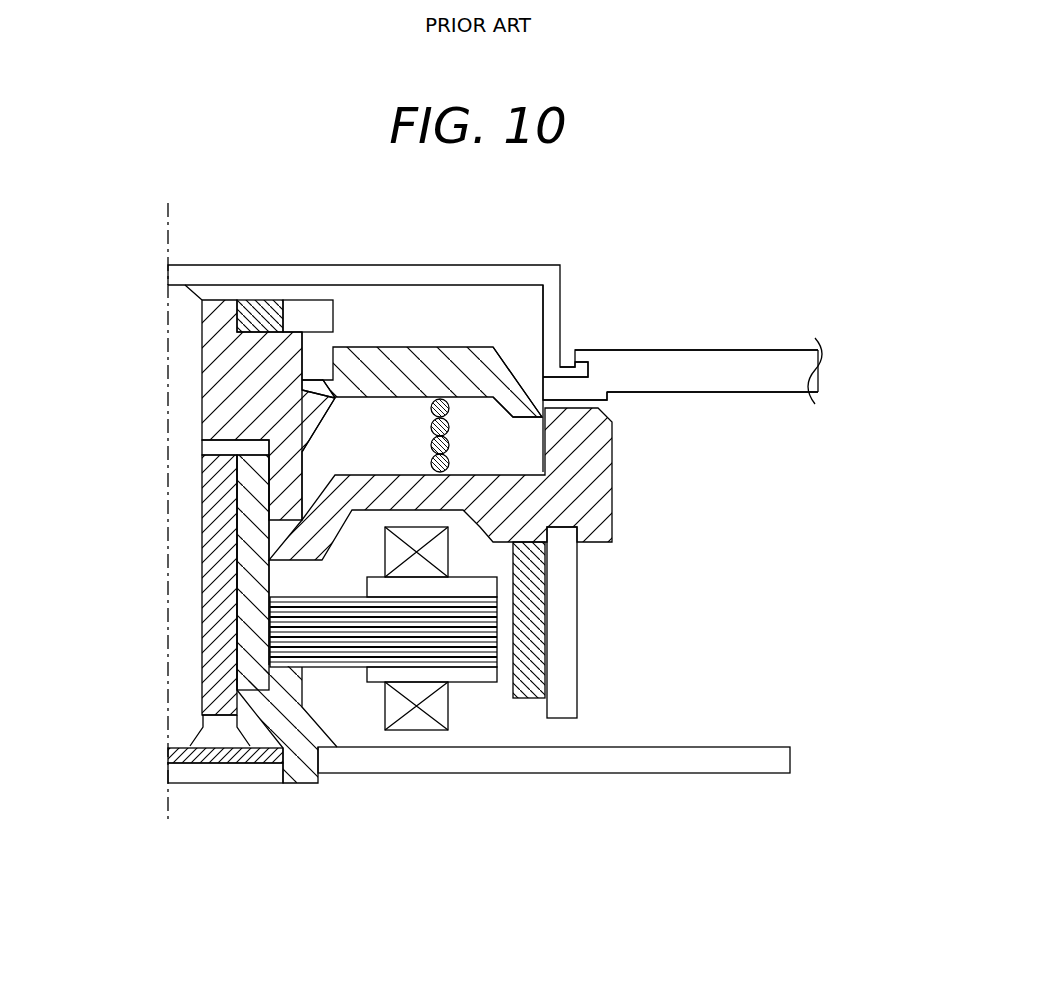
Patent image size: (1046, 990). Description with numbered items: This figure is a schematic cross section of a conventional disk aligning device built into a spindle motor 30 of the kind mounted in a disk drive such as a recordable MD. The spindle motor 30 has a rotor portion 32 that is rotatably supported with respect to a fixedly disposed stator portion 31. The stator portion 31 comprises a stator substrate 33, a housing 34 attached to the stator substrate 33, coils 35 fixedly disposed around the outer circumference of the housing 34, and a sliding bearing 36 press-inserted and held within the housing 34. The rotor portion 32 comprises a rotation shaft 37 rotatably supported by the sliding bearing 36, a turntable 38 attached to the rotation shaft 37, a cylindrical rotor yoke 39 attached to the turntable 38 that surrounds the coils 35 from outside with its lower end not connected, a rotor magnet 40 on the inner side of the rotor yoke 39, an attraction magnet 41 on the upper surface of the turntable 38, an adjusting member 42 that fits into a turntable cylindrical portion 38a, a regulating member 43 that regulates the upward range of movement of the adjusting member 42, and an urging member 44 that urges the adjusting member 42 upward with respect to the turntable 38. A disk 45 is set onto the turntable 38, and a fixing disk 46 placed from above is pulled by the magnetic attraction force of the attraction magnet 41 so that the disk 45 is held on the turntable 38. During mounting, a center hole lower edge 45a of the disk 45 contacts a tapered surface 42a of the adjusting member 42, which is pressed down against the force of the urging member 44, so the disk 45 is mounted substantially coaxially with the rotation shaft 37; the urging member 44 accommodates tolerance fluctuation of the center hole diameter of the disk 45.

The spindle motor 30 is at (805, 576).
The stator portion 31 is at (656, 814).
The rotor portion 32 is at (706, 324).
The stator substrate 33 is at (775, 758).
The housing 34 is at (301, 770).
The coils 35 is at (422, 722).
The sliding bearing 36 is at (215, 681).
The rotation shaft 37 is at (183, 432).
The turntable 38 is at (590, 490).
The turntable cylindrical portion 38a is at (300, 357).
The rotor yoke 39 is at (567, 658).
The rotor magnet 40 is at (535, 598).
The attraction magnet 41 is at (255, 300).
The adjusting member 42 is at (413, 356).
The tapered surface 42a is at (508, 363).
The regulating member 43 is at (312, 302).
The urging member 44 is at (430, 433).
The disk 45 is at (782, 382).
The center hole lower edge 45a is at (548, 399).
The fixing disk 46 is at (390, 275).